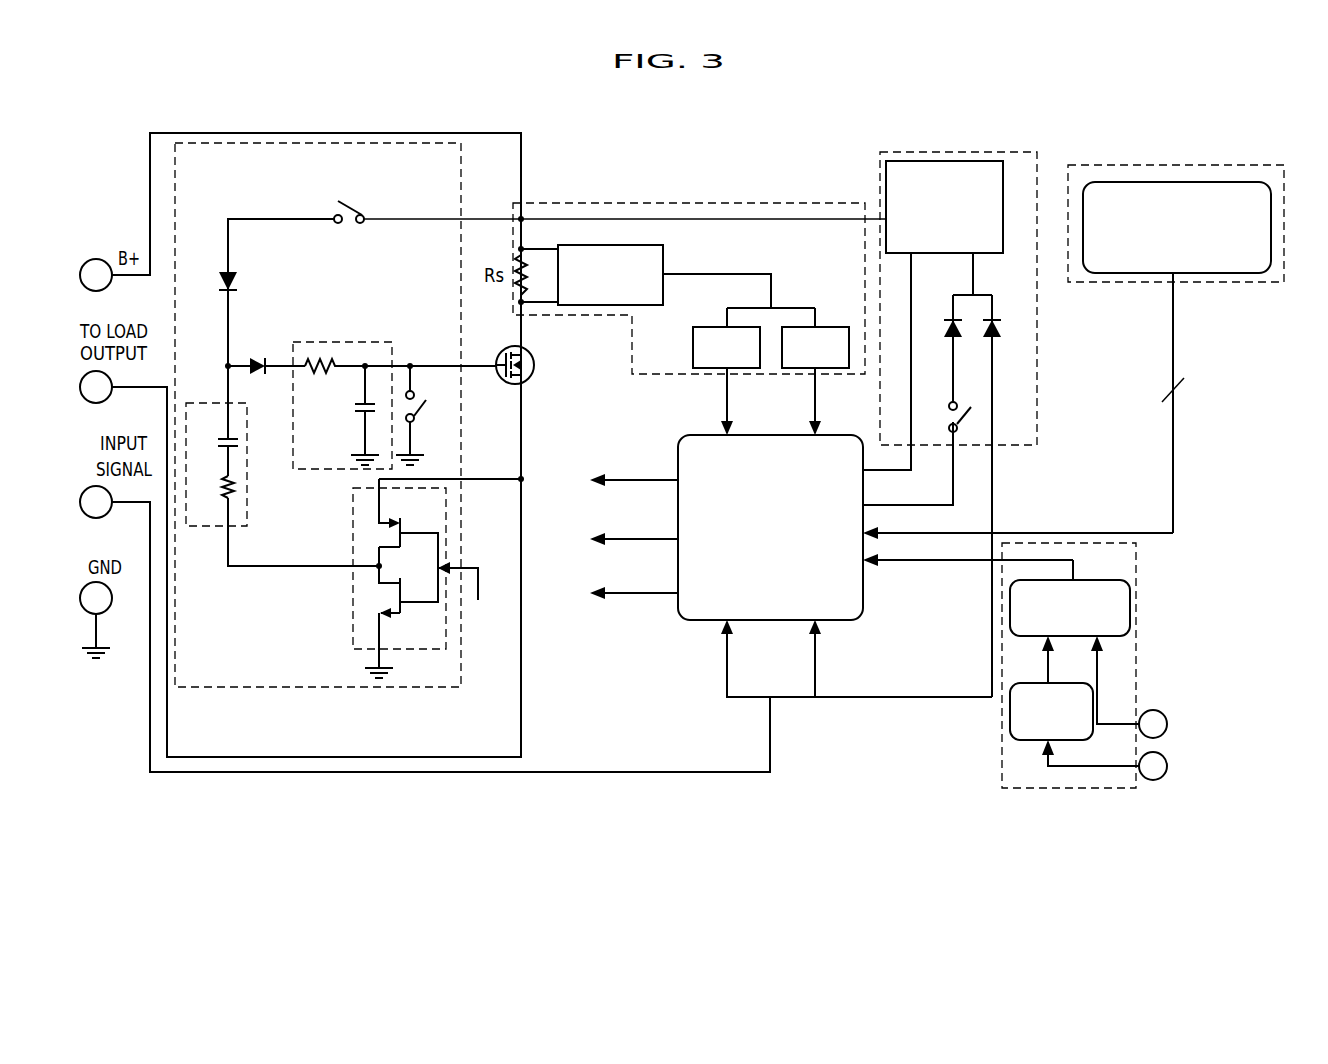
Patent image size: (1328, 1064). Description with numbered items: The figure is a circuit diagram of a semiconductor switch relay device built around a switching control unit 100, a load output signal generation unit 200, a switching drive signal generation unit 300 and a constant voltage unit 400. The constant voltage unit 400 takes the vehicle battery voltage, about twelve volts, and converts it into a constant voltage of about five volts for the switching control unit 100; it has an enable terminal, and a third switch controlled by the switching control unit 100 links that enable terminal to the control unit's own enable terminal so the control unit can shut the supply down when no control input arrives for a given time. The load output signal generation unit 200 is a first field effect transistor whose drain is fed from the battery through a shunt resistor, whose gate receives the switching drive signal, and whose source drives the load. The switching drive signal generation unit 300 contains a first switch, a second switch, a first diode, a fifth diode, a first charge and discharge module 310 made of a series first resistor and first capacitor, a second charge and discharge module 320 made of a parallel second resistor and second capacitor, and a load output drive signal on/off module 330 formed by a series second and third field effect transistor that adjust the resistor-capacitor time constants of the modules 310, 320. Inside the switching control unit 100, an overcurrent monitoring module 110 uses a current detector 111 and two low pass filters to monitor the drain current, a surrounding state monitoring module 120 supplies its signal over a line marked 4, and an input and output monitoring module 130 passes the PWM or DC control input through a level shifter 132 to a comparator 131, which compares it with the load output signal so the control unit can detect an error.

The switching control unit 100 is at (688, 620).
The overcurrent monitoring module 110 is at (618, 203).
The current detector 111 is at (665, 250).
The surrounding state monitoring module 120 is at (1205, 273).
The input and output monitoring module 130 is at (1137, 640).
The comparator 131 is at (1133, 594).
The level shifter 132 is at (1030, 742).
The load output signal generation unit 200 is at (533, 378).
The switching drive signal generation unit 300 is at (195, 687).
The first charge and discharge module 310 is at (190, 527).
The second charge and discharge module 320 is at (377, 342).
The load output drive signal on/off module 330 is at (353, 618).
The constant voltage unit 400 is at (978, 152).
The 4-bit signal bus 4 is at (1182, 390).